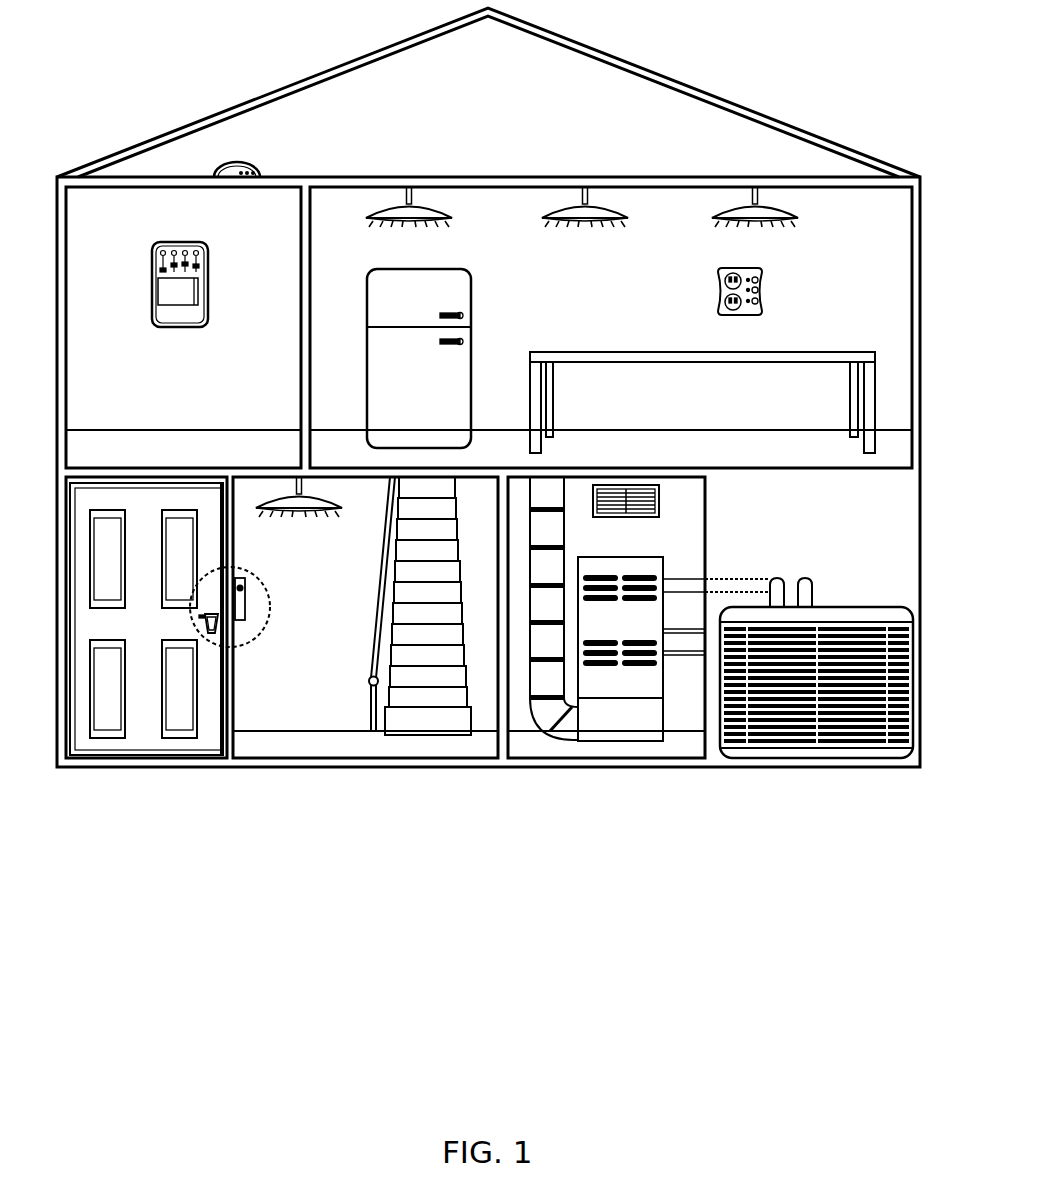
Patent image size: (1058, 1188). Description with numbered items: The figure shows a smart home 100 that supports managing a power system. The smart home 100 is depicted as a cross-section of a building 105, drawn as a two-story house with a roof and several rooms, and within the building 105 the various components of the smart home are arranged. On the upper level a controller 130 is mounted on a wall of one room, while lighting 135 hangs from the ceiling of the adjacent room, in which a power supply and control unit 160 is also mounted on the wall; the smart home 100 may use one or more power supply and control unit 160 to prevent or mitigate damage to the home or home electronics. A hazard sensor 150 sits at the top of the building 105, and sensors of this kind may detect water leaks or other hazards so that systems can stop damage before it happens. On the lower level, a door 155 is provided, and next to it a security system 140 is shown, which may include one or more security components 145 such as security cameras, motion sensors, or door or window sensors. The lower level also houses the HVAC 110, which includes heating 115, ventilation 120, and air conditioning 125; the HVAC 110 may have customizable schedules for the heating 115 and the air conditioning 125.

The smart home 100 is at (812, 1094).
The building 105 is at (687, 82).
The HVAC 110 is at (710, 661).
The heating 115 is at (648, 545).
The ventilation 120 is at (660, 489).
The air conditioning 125 is at (827, 605).
The controller 130 is at (211, 297).
The lighting 135 is at (800, 232).
The security system 140 is at (247, 607).
The security component 145 is at (245, 616).
The hazard sensor 150 is at (261, 174).
The door 155 is at (152, 760).
The power supply and control unit 160 is at (765, 295).